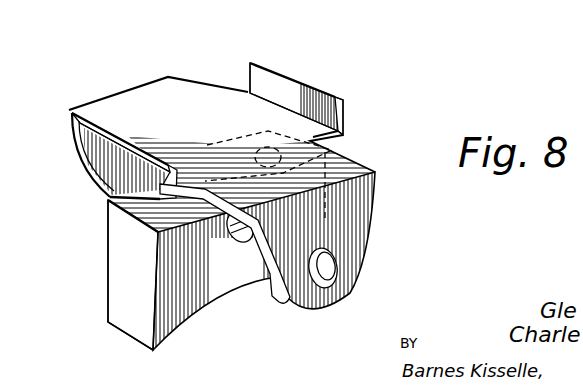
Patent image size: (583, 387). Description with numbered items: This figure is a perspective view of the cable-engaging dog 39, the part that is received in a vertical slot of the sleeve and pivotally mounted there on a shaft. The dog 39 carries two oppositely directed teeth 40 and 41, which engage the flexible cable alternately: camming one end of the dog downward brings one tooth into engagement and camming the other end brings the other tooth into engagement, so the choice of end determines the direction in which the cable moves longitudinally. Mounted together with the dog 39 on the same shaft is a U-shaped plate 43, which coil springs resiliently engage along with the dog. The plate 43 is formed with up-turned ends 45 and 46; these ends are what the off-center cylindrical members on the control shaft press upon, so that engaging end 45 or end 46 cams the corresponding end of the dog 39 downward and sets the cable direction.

The dog 39 is at (232, 273).
The tooth 40 is at (153, 350).
The tooth 41 is at (312, 270).
The U-shaped plate 43 is at (185, 102).
The up-turned end 45 is at (83, 147).
The up-turned end 46 is at (297, 86).